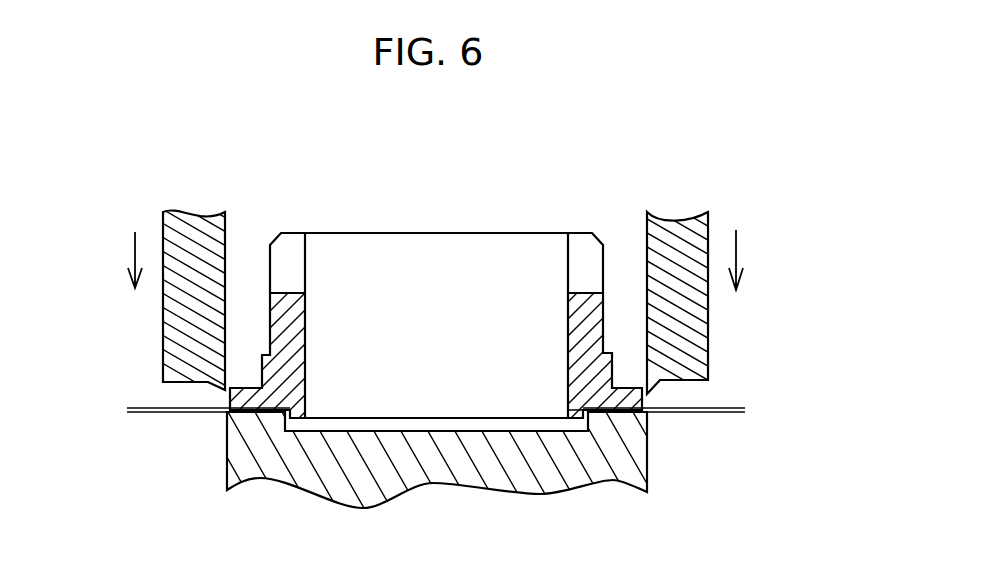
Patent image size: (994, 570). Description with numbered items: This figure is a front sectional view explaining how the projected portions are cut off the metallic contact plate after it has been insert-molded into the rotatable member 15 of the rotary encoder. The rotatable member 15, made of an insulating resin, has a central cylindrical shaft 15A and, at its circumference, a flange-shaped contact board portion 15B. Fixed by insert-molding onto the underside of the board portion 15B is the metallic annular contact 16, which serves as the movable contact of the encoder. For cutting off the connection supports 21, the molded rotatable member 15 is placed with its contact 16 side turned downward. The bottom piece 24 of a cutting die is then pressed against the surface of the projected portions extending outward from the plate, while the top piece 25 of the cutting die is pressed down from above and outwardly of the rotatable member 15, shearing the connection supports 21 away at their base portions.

The rotatable member 15 is at (632, 152).
The cylindrical shaft 15A is at (426, 258).
The contact board portion 15B is at (627, 387).
The metallic annular contact 16 is at (596, 406).
The connection support 21 is at (678, 412).
The bottom piece of cutting die 24 is at (565, 470).
The top piece of cutting die 25 is at (695, 367).